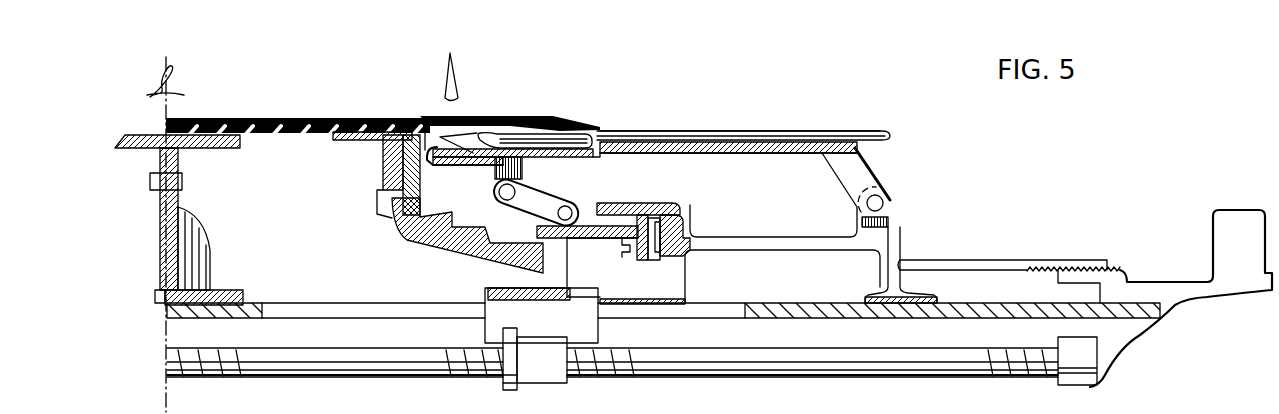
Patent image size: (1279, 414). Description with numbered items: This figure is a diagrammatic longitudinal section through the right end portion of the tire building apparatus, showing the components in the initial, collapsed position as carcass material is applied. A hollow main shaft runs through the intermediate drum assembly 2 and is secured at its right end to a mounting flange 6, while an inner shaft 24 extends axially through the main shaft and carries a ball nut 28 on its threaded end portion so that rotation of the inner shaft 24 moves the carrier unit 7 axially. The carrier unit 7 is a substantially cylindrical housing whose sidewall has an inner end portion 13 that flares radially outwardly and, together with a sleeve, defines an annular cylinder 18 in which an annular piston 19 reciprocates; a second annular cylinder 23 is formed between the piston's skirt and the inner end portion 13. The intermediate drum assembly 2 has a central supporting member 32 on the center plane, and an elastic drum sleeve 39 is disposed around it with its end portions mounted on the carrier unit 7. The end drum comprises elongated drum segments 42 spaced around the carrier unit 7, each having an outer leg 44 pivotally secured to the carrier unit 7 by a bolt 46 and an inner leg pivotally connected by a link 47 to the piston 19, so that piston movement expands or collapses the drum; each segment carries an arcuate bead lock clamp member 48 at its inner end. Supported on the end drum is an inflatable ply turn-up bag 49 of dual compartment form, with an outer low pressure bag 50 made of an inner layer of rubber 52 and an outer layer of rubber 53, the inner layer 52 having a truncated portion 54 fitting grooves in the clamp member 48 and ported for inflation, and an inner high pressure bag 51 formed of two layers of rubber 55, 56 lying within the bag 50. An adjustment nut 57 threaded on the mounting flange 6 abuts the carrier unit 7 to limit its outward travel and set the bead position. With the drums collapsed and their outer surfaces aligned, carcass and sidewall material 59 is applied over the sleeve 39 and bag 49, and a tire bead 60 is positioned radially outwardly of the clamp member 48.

The intermediate drum assembly 2 is at (340, 128).
The mounting flange 6 is at (1237, 213).
The carrier unit 7 is at (890, 237).
The inner end portion 13 is at (470, 248).
The annular cylinder 18 is at (680, 204).
The annular piston 19 is at (617, 204).
The annular cylinder 23 is at (603, 248).
The inner shaft 24 is at (348, 365).
The ball nut 28 is at (517, 387).
The central supporting member 32 is at (162, 238).
The elastic drum sleeve 39 is at (280, 131).
The drum segment 42 is at (712, 141).
The outer leg 44 is at (870, 175).
The bolt 46 is at (883, 204).
The link 47 is at (552, 197).
The bead lock clamp member 48 is at (435, 148).
The ply turn-up bag 49 is at (890, 133).
The low pressure bag 50 is at (833, 135).
The high pressure bag 51 is at (583, 139).
The inner layer of rubber 52 is at (765, 138).
The outer layer of rubber 53 is at (775, 130).
The truncated portion 54 is at (462, 168).
The layer of rubber 55 is at (567, 156).
The layer of rubber 56 is at (557, 137).
The adjustment nut 57 is at (1010, 260).
The carcass and sidewall material 59 is at (300, 120).
The tire bead 60 is at (463, 93).